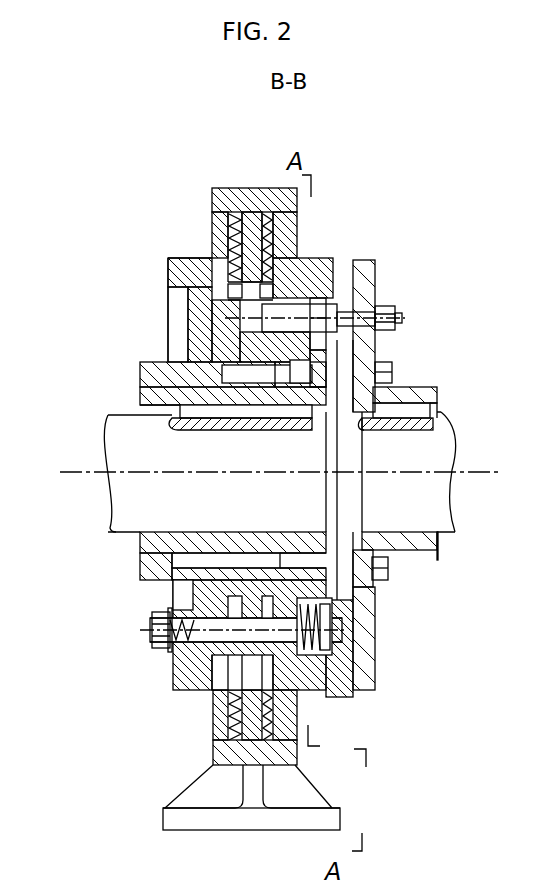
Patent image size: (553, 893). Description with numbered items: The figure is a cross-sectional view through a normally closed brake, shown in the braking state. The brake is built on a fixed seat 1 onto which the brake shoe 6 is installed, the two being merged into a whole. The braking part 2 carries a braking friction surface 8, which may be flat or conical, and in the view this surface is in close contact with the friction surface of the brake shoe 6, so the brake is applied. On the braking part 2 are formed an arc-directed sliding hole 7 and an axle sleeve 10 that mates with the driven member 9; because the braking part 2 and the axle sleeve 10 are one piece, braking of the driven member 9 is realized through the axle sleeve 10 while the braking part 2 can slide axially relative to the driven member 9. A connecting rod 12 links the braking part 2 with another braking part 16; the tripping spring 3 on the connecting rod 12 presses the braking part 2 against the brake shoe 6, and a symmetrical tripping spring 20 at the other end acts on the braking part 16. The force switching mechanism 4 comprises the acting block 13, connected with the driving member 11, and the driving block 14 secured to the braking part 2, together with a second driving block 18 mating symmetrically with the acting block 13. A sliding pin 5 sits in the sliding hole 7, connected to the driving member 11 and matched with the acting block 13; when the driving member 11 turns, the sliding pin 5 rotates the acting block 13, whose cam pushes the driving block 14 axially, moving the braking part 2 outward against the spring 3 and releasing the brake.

The fixed seat 1 is at (253, 192).
The braking part 2 is at (300, 692).
The tripping spring 3 is at (303, 628).
The force switching mechanism 4 is at (200, 287).
The sliding pin 5 is at (350, 293).
The brake shoe 6 is at (268, 254).
The sliding hole 7 is at (335, 352).
The braking friction surface 8 is at (268, 240).
The driven member 9 is at (128, 503).
The axle sleeve 10 is at (172, 397).
The driving member 11 is at (440, 509).
The connecting rod 12 is at (300, 692).
The acting block 13 is at (172, 356).
The driving block 14 is at (396, 392).
The braking part 16 is at (218, 706).
The driving block 18 is at (167, 322).
The tripping spring 20 is at (175, 662).